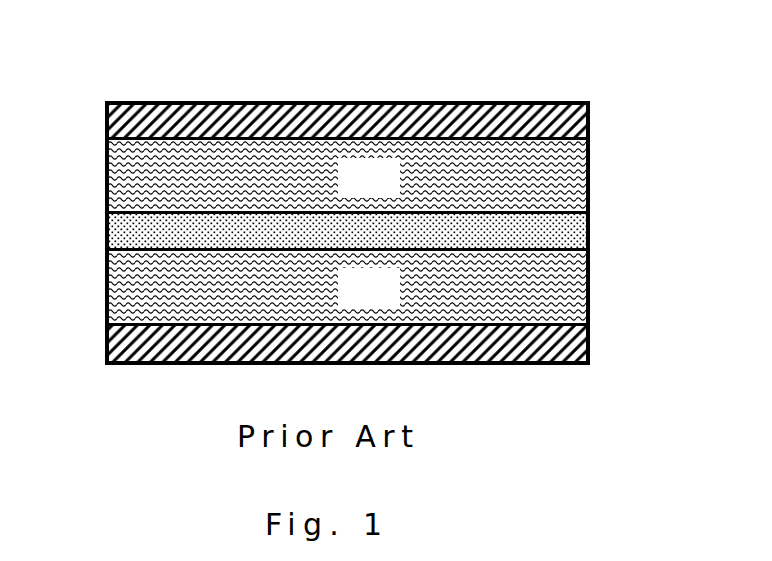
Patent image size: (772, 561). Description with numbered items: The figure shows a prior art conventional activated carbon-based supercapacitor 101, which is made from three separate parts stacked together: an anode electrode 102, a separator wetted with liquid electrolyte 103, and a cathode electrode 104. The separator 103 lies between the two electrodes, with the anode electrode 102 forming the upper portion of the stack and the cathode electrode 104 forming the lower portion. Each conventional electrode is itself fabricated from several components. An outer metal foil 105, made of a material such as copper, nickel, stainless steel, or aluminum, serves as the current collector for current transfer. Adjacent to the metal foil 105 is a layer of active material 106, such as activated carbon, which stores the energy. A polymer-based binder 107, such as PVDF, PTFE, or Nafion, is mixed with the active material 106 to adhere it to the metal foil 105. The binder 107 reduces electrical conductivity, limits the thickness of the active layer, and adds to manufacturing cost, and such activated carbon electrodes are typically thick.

The conventional supercapacitor 101 is at (380, 49).
The anode electrode 102 is at (97, 102).
The separator wetted with liquid electrolyte 103 is at (434, 231).
The cathode electrode 104 is at (97, 252).
The metal foil 105 is at (434, 221).
The active material 106 is at (434, 231).
The polymer-based binder 107 is at (383, 185).